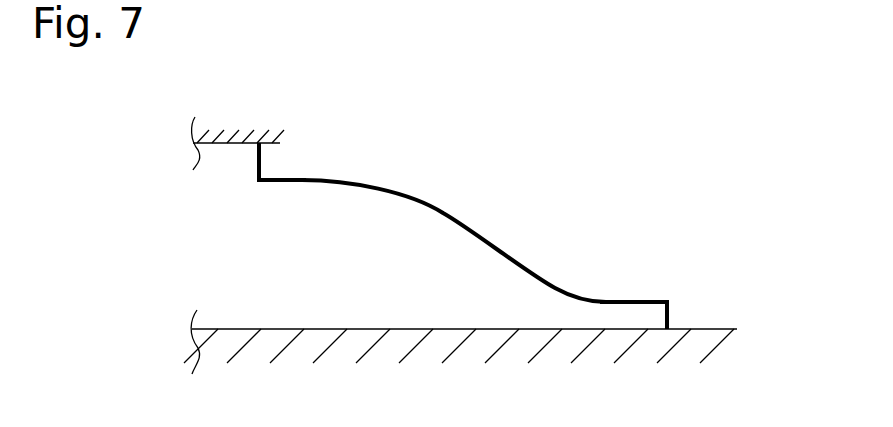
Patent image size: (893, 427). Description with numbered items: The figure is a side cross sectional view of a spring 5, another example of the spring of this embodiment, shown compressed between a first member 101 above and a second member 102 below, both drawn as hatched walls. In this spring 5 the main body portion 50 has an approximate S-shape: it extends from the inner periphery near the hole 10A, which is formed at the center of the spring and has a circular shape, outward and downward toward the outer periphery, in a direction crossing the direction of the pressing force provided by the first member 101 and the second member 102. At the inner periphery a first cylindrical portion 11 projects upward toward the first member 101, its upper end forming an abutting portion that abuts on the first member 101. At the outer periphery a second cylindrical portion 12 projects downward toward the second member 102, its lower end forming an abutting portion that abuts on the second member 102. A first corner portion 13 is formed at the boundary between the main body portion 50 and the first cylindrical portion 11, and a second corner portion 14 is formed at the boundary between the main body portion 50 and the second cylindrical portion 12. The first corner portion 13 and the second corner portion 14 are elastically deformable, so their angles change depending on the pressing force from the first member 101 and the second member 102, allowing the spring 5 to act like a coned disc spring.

The spring 5 is at (645, 132).
The hole 10A is at (216, 178).
The first cylindrical portion 11 is at (262, 166).
The second cylindrical portion 12 is at (670, 317).
The first corner portion 13 is at (260, 180).
The second corner portion 14 is at (666, 302).
The main body portion 50 is at (443, 213).
The first member 101 is at (245, 128).
The second member 102 is at (305, 350).